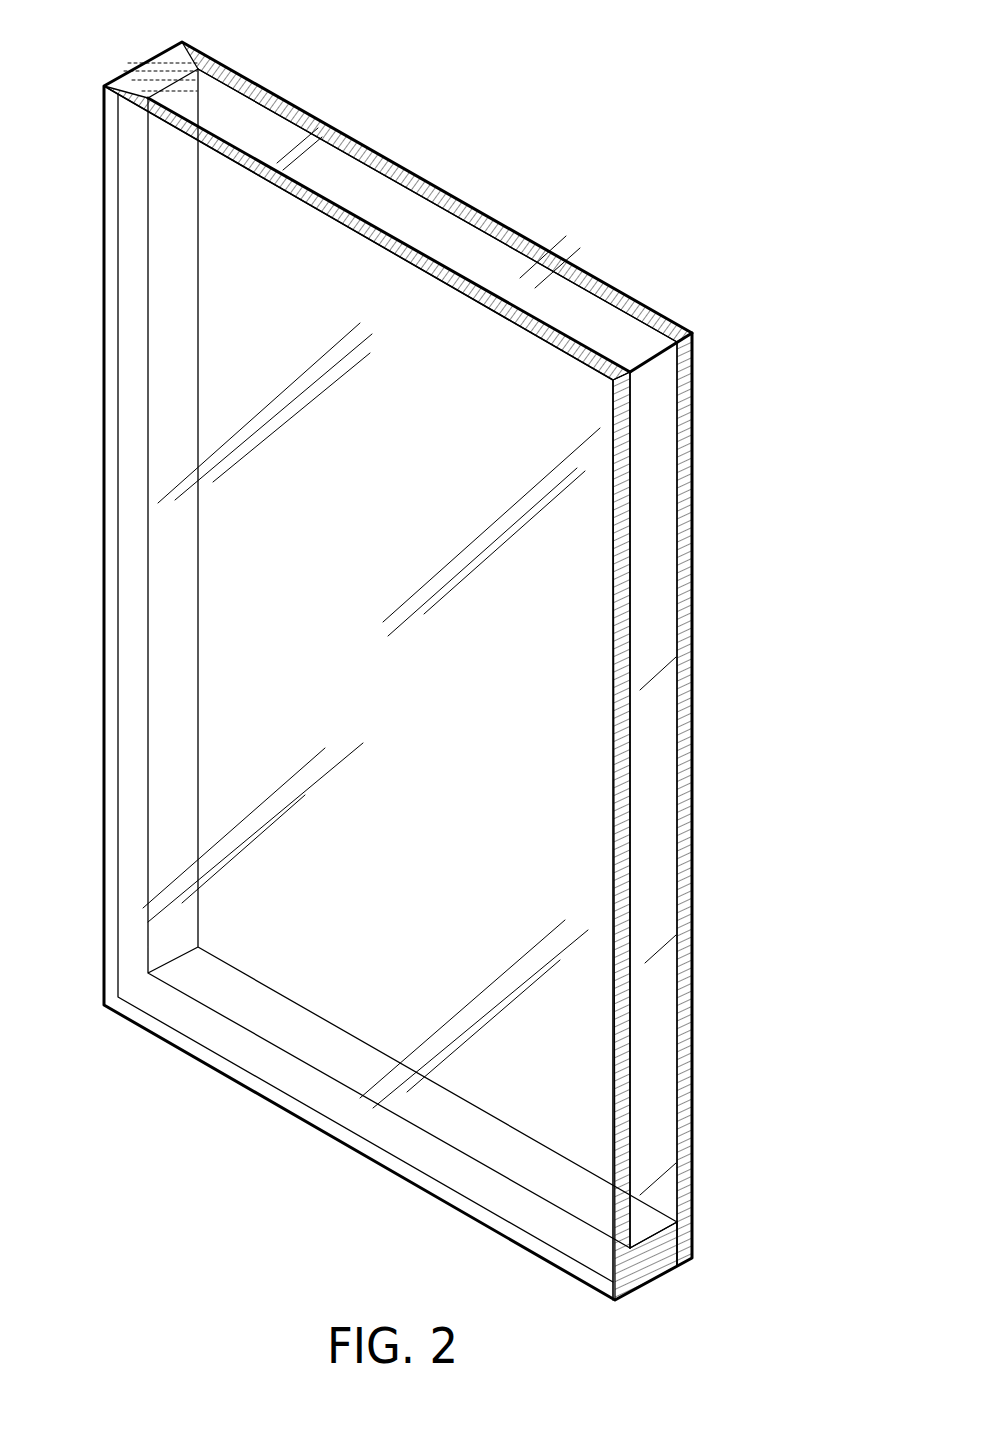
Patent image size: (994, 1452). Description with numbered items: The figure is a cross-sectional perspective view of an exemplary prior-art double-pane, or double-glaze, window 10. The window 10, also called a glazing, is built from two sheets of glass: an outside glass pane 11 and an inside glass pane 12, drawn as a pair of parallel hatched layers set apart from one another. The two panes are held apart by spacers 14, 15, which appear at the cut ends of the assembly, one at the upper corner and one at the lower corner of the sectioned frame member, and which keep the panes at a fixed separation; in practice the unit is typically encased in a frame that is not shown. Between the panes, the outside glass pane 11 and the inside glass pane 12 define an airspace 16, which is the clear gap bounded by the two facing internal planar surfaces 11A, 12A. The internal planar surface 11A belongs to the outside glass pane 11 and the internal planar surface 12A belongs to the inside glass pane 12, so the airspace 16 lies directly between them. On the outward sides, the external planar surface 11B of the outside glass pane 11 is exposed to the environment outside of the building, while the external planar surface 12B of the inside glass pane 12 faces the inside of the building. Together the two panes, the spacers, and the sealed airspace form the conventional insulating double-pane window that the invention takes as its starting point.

The double-pane window 10 is at (620, 128).
The outside glass pane 11 is at (638, 318).
The internal planar surface of outside glass pane 11A is at (385, 205).
The external planar surface of outside glass pane 11B is at (692, 400).
The inside glass pane 12 is at (513, 313).
The internal planar surface of inside glass pane 12A is at (328, 195).
The external planar surface of inside glass pane 12B is at (570, 767).
The spacer 14 is at (156, 72).
The spacer 15 is at (655, 1267).
The airspace 16 is at (655, 560).